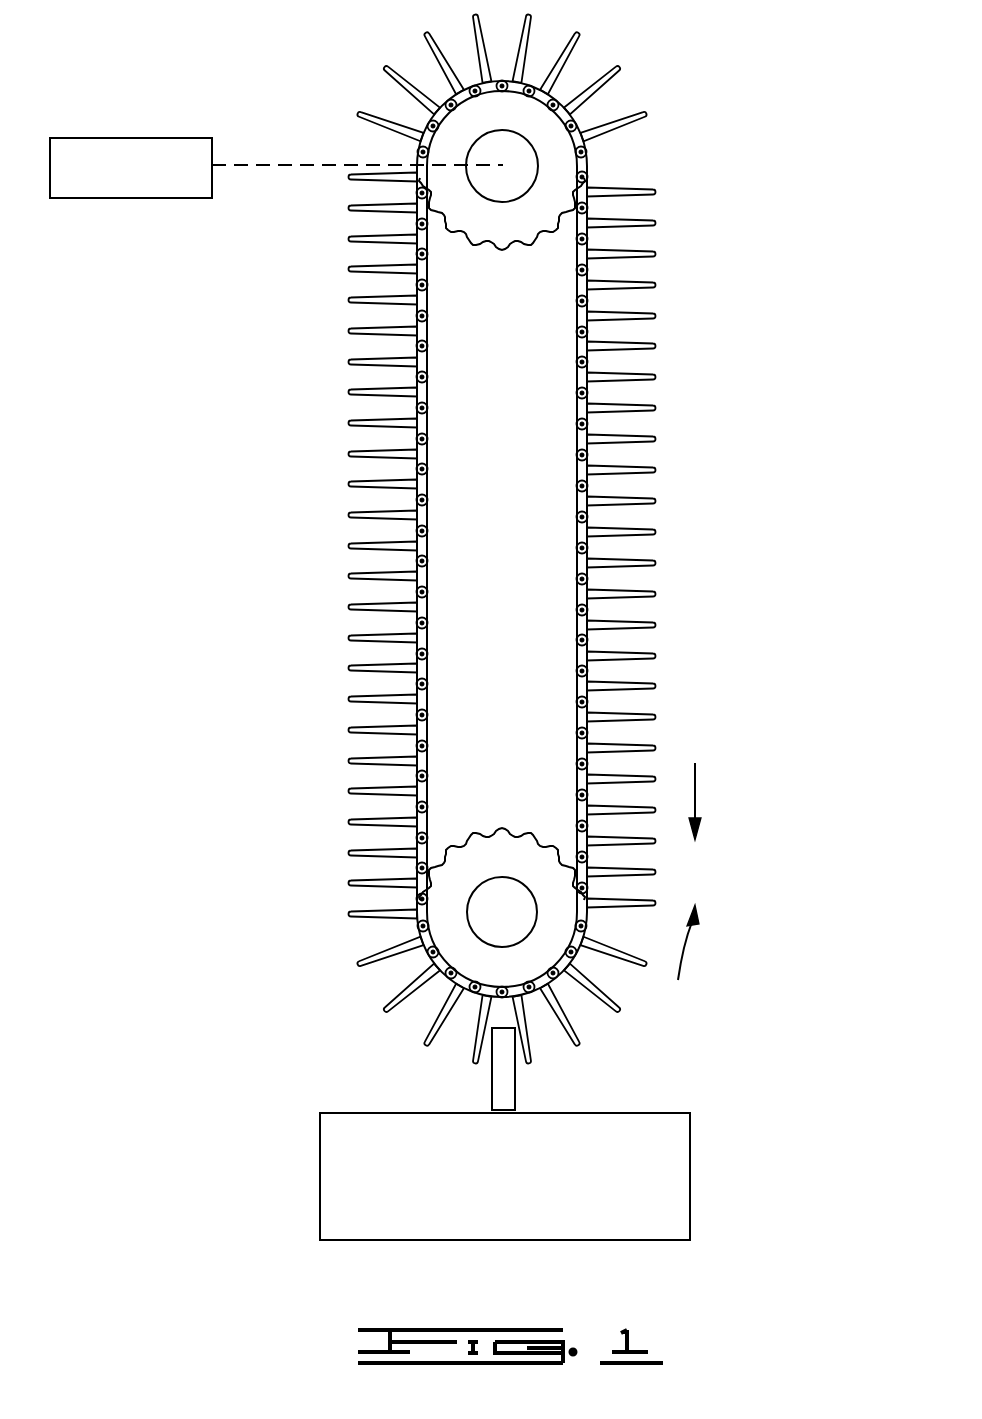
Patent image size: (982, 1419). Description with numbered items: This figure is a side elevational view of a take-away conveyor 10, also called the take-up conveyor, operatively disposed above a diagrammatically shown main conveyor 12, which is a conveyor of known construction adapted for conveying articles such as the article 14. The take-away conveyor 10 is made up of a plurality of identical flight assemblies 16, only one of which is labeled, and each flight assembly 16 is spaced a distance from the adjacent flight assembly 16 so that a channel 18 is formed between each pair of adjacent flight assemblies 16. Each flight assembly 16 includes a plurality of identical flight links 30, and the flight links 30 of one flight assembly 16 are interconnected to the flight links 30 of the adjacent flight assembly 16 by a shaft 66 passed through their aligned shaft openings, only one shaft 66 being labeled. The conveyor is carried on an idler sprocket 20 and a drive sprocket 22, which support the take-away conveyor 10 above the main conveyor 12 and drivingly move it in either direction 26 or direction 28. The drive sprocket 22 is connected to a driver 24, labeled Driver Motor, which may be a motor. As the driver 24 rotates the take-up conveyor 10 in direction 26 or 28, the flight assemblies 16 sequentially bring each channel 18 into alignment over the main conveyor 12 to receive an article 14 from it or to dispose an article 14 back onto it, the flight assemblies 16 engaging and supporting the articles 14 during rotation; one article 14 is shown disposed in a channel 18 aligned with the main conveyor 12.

The take-away conveyor 10 is at (240, 509).
The main conveyor 12 is at (310, 1140).
The article 14 is at (478, 1082).
The flight assembly 16 is at (343, 730).
The channel 18 is at (410, 1013).
The idler sprocket 20 is at (440, 905).
The drive sprocket 22 is at (566, 167).
The driver 24 is at (112, 198).
The direction 26 is at (690, 948).
The direction 28 is at (697, 792).
The flight link 30 is at (355, 641).
The shaft 66 is at (418, 921).